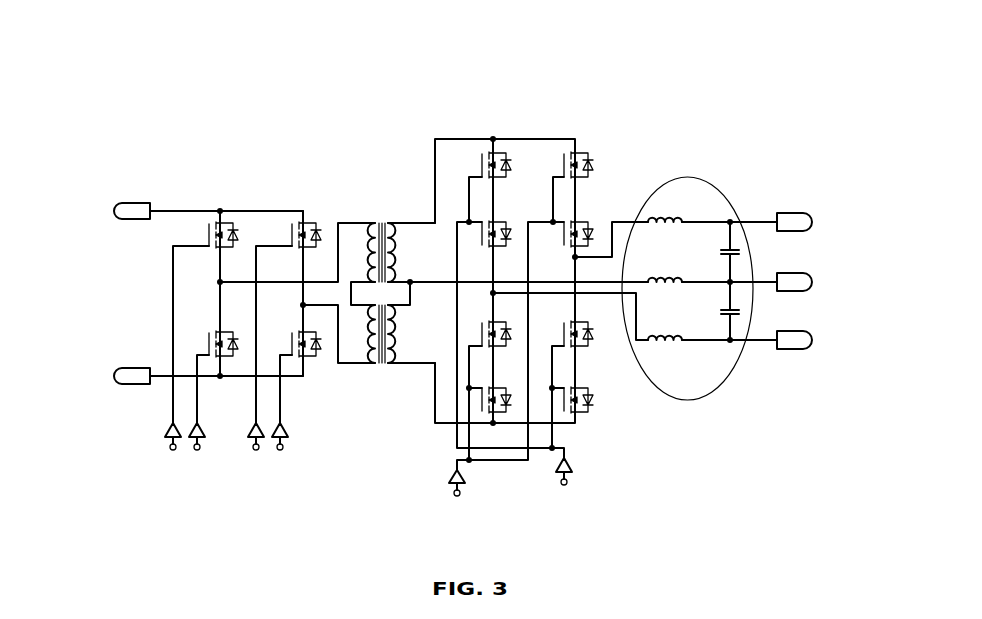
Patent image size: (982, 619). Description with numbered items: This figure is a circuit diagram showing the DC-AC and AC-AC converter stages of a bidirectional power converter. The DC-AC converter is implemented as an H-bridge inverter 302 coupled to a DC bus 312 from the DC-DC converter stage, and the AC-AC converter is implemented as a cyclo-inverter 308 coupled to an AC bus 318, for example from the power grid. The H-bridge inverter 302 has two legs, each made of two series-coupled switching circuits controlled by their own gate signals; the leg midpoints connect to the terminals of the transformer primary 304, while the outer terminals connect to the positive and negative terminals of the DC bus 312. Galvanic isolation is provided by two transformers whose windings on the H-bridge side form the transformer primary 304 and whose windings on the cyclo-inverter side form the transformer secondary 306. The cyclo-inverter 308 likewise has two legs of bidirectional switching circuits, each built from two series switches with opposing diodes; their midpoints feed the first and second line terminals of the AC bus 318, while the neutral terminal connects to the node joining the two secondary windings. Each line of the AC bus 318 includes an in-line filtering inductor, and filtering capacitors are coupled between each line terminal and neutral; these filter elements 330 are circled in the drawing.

The H-bridge inverter 302 is at (318, 193).
The transformer primary 304 is at (358, 366).
The transformer secondary 306 is at (403, 360).
The cyclo-inverter 308 is at (590, 100).
The DC bus 312 is at (175, 325).
The AC bus 318 is at (822, 312).
The filter elements 330 is at (690, 398).